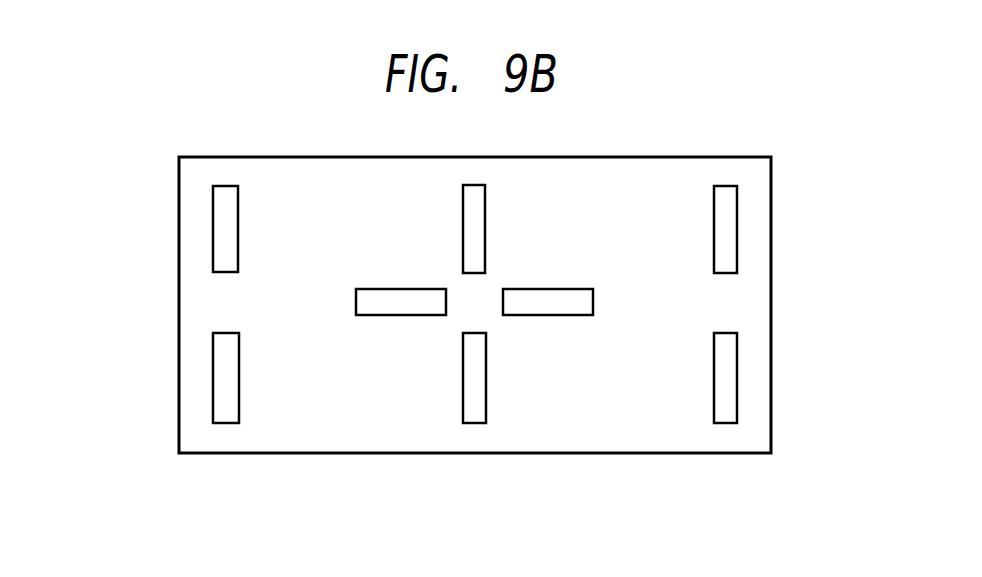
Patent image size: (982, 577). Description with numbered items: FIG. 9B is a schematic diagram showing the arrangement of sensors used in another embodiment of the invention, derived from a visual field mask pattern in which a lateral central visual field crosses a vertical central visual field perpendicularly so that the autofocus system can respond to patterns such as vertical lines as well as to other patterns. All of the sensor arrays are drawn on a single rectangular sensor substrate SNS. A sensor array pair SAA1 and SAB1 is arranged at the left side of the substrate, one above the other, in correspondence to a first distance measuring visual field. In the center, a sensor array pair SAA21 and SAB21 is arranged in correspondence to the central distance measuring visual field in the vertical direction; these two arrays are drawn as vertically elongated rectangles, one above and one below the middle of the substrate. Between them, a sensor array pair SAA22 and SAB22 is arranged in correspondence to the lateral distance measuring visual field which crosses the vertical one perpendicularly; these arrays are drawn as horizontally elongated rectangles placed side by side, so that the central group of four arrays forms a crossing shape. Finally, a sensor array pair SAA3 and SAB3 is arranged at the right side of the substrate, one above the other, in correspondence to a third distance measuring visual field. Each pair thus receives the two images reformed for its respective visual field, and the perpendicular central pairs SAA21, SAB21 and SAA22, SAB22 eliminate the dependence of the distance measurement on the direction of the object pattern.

The sensor substrate SNS is at (722, 455).
The sensor array SAA1 is at (222, 232).
The sensor array SAB1 is at (220, 374).
The sensor array SAA21 is at (483, 219).
The sensor array SAB21 is at (482, 406).
The sensor array SAA22 is at (390, 295).
The sensor array SAB22 is at (572, 296).
The sensor array SAA3 is at (732, 247).
The sensor array SAB3 is at (735, 387).